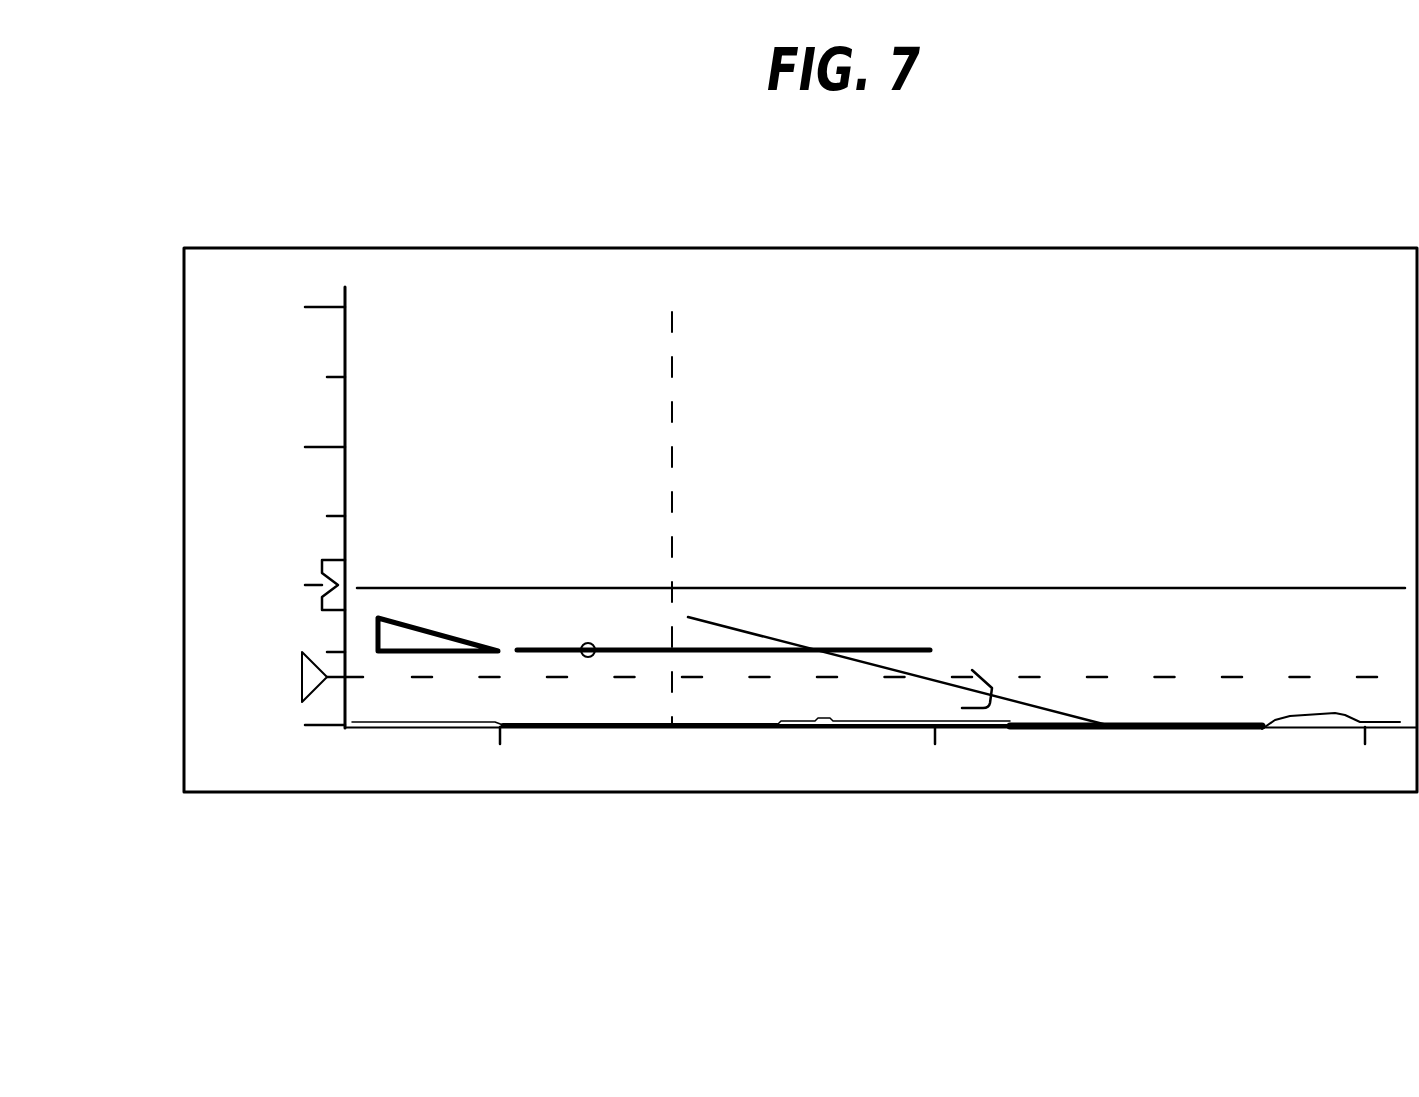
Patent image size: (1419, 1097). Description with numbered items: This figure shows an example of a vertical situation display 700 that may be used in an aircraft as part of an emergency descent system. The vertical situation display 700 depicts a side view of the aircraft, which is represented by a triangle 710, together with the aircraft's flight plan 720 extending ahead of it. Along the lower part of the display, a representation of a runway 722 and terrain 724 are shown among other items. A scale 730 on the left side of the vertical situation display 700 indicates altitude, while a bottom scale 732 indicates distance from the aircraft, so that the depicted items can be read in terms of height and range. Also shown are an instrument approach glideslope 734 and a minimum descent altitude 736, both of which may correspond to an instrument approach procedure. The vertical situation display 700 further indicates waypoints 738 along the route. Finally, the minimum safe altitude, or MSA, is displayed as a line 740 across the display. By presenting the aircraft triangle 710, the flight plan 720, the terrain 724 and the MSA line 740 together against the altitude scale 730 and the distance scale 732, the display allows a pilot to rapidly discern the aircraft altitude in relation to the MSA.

The vertical situation display 700 is at (1125, 211).
The triangle 710 is at (436, 632).
The flight plan 720 is at (763, 633).
The runway 722 is at (1193, 724).
The terrain 724 is at (1327, 712).
The scale 730 is at (222, 512).
The bottom scale 732 is at (705, 822).
The instrument approach glideslope 734 is at (935, 678).
The minimum descent altitude 736 is at (300, 677).
The waypoints 738 is at (742, 291).
The line 740 is at (930, 588).